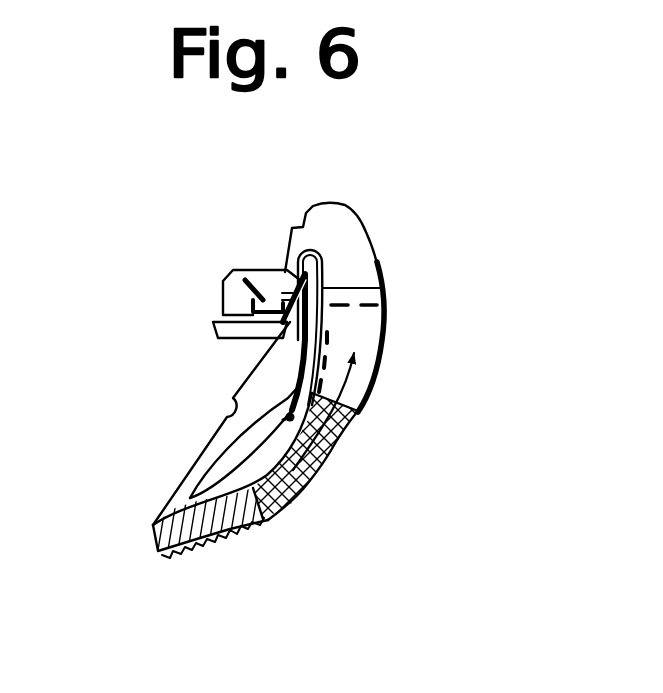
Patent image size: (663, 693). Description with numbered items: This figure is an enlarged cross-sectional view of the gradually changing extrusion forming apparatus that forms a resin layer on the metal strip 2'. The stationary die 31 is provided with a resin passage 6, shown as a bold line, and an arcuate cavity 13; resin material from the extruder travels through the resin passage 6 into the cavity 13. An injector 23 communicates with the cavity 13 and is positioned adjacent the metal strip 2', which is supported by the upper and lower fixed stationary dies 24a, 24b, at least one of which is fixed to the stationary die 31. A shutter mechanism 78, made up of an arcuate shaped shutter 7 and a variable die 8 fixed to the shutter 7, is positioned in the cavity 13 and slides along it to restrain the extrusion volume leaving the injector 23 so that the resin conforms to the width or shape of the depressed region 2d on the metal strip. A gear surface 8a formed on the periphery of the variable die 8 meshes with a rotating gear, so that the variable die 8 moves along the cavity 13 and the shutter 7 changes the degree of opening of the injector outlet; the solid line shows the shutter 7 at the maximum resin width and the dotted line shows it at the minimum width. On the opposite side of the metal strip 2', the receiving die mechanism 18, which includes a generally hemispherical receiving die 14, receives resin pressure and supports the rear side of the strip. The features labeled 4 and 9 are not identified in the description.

The housing 4 is at (362, 243).
The cavity 13 is at (340, 217).
The injector 23 is at (386, 287).
The metal strip 2' is at (395, 327).
The engaging portion 9 is at (383, 348).
The stationary die 31 is at (186, 308).
The upper fixed stationary die 24a is at (268, 280).
The lower fixed stationary die 24b is at (216, 329).
The depressed region 2d is at (287, 391).
The receiving die mechanism 18 is at (205, 439).
The receiving die 14 is at (188, 487).
The resin passage 6 is at (370, 402).
The shutter 7 is at (340, 448).
The shutter mechanism 78 is at (315, 496).
The variable die 8 is at (240, 510).
The gear surface 8a is at (200, 560).